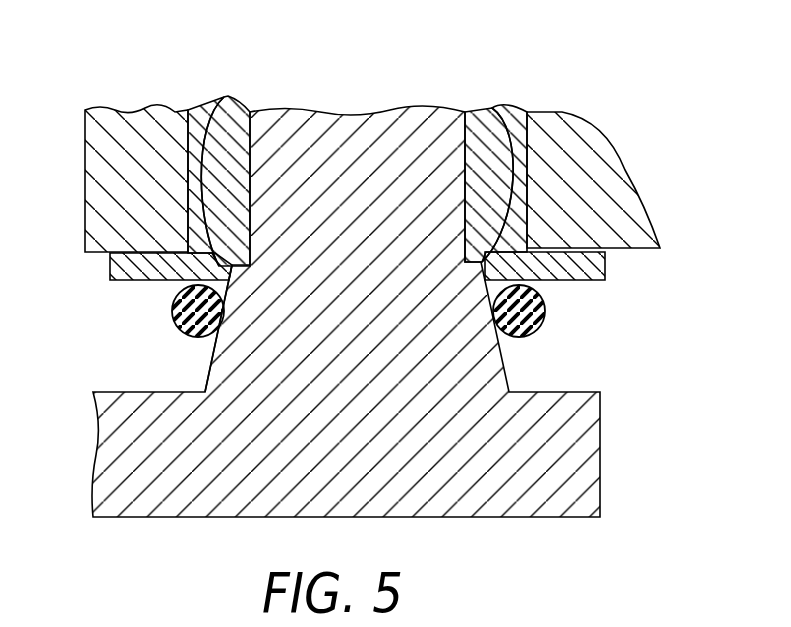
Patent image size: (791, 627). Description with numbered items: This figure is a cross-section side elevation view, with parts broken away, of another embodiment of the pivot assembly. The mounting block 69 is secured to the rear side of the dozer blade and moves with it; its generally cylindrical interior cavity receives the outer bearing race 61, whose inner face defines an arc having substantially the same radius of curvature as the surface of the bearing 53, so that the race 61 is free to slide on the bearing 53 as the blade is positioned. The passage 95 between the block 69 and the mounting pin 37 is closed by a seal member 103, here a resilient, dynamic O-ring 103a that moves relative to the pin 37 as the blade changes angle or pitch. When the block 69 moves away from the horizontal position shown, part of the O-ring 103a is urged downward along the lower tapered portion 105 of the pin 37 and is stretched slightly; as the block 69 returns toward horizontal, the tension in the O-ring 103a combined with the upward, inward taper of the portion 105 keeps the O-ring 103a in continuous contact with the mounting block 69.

The mounting pin 37 is at (383, 125).
The outer bearing race 61 is at (200, 115).
The bearing 53 is at (237, 103).
The mounting block 69 is at (627, 197).
The passage 95 is at (603, 264).
The seal member 103 is at (560, 350).
The O-ring 103a is at (173, 313).
The tapered portion 105 is at (211, 359).